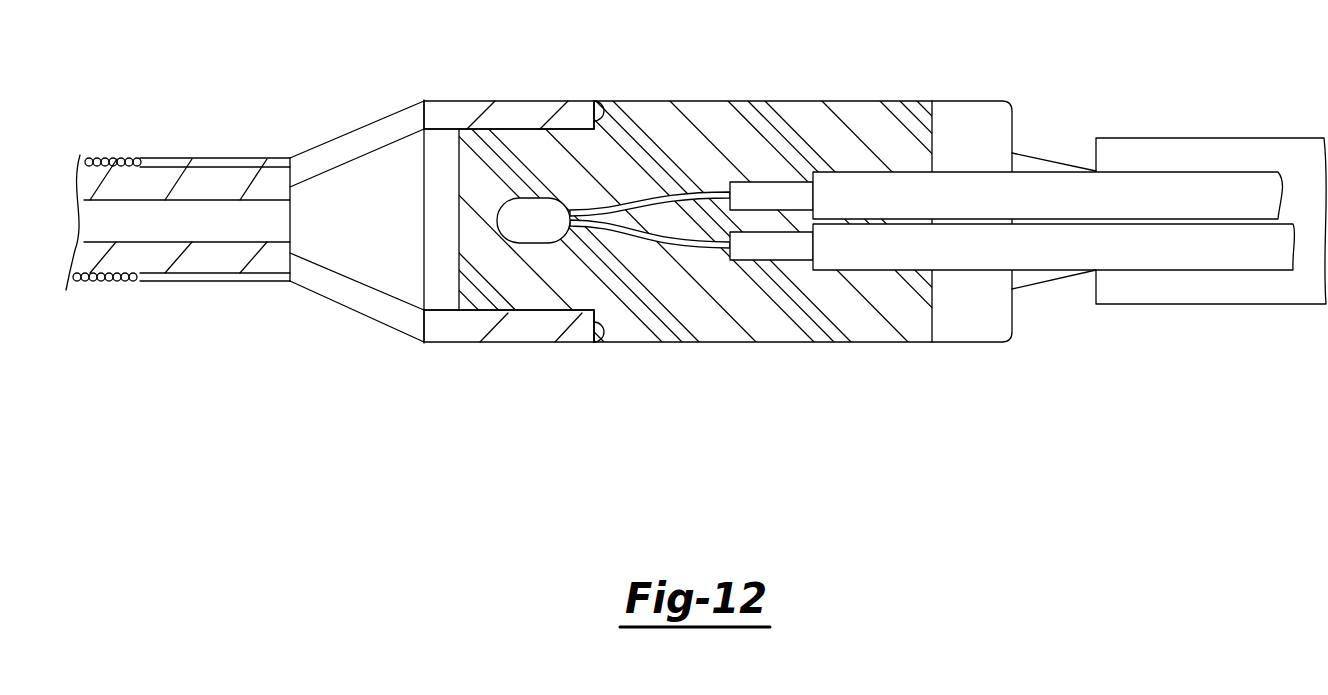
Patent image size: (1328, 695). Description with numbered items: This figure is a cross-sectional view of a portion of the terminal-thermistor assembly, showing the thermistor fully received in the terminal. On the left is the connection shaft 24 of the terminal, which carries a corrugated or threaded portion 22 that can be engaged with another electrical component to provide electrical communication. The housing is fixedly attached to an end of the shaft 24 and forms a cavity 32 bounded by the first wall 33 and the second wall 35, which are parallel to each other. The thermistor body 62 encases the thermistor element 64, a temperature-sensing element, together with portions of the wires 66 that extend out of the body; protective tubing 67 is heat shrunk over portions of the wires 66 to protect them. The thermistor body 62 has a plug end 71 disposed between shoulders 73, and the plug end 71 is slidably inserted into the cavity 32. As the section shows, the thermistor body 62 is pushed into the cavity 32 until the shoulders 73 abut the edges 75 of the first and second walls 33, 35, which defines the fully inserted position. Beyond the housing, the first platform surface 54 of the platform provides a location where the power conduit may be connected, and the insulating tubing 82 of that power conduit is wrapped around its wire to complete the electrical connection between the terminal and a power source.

The corrugated or threaded portion 22 is at (108, 160).
The connection shaft 24 is at (110, 282).
The cavity 32 is at (440, 158).
The first wall 33 is at (480, 343).
The second wall 35 is at (493, 100).
The first platform surface 54 is at (970, 110).
The thermistor body 62 is at (752, 98).
The thermistor element 64 is at (510, 214).
The wires 66 is at (786, 256).
The protective tubing 67 is at (1070, 183).
The plug end 71 is at (440, 265).
The shoulders 73 is at (594, 118).
The edges 75 is at (611, 116).
The insulating tubing 82 is at (1278, 147).